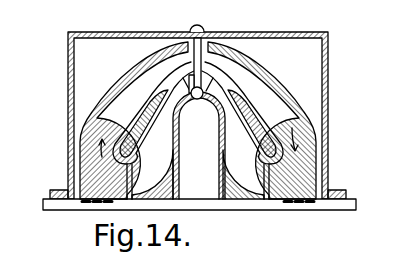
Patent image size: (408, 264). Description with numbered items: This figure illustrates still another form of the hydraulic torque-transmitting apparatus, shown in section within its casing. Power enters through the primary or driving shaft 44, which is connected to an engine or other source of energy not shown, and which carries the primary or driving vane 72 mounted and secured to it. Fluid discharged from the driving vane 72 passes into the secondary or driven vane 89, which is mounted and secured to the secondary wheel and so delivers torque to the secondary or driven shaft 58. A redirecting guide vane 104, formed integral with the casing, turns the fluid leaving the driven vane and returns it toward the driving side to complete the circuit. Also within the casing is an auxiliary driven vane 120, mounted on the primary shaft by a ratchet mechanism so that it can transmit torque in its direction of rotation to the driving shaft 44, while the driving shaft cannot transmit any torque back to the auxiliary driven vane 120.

The primary or driving vane 72 is at (146, 81).
The secondary or driven vane 89 is at (259, 87).
The auxiliary driven vane 120 is at (199, 145).
The redirecting guide vane 104 is at (230, 140).
The secondary or driven shaft 58 is at (347, 199).
The primary or driving shaft 44 is at (72, 205).